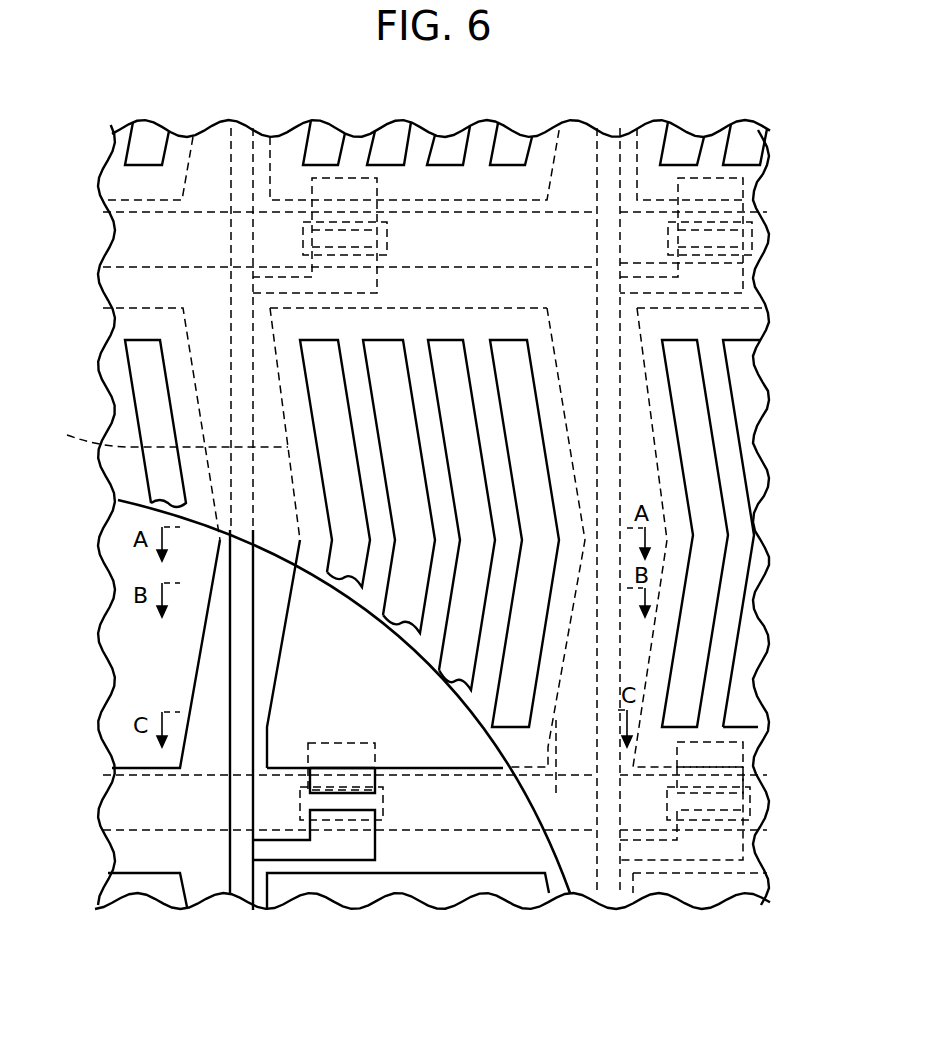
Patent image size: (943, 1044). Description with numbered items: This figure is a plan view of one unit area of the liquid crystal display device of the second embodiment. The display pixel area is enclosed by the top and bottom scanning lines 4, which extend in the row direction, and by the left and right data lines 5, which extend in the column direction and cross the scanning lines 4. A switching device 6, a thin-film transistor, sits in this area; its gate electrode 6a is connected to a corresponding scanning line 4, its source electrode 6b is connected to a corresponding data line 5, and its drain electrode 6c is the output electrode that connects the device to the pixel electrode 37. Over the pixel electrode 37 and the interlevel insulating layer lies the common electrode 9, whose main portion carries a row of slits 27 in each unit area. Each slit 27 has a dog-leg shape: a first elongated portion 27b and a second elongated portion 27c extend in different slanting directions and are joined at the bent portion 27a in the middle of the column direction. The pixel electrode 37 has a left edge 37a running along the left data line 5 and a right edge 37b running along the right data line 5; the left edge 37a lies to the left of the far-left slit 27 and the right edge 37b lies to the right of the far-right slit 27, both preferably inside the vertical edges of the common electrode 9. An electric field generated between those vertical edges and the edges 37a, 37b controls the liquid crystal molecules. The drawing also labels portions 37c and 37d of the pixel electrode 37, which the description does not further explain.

The scanning line 4 is at (130, 242).
The data line 5 is at (245, 142).
The switching device 6 is at (270, 802).
The gate electrode 6a is at (368, 802).
The source electrode 6b is at (367, 848).
The drain electrode 6c is at (323, 770).
The common electrode 9 is at (396, 668).
The slit 27 is at (383, 345).
The bent portion 27a is at (543, 540).
The first elongated portion 27b is at (521, 433).
The second elongated portion 27c is at (510, 697).
The pixel electrode 37 is at (277, 663).
The left edge 37a is at (154, 430).
The right edge 37b is at (568, 773).
The pixel electrode upper portion 37c is at (437, 308).
The pixel electrode lower edge 37d is at (477, 768).